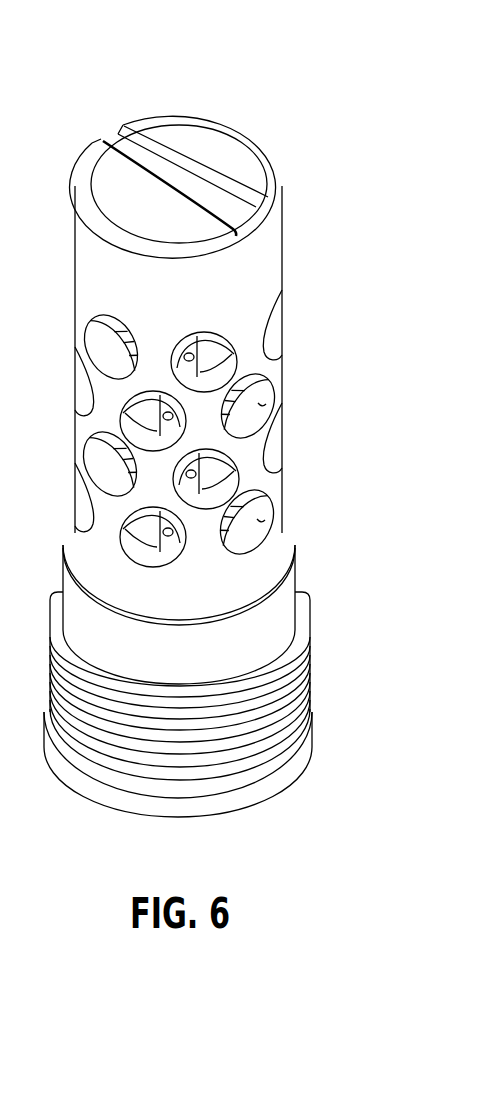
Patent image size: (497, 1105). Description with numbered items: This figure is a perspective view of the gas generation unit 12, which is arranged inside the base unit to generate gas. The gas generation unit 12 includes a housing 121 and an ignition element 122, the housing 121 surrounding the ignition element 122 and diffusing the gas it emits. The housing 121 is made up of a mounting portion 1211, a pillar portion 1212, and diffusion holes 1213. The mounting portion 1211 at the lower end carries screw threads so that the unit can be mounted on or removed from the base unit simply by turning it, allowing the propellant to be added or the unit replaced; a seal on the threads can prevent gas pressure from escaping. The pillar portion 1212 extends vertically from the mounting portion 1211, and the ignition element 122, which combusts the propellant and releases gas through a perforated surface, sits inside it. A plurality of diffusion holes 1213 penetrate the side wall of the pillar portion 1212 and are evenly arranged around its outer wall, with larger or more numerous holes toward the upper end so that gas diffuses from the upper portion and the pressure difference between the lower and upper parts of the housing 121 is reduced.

The gas generation unit 12 is at (293, 62).
The housing 121 is at (383, 385).
The mounting portion 1211 is at (277, 612).
The pillar portion 1212 is at (265, 478).
The diffusion hole 1213 is at (262, 407).
The ignition element 122 is at (188, 367).